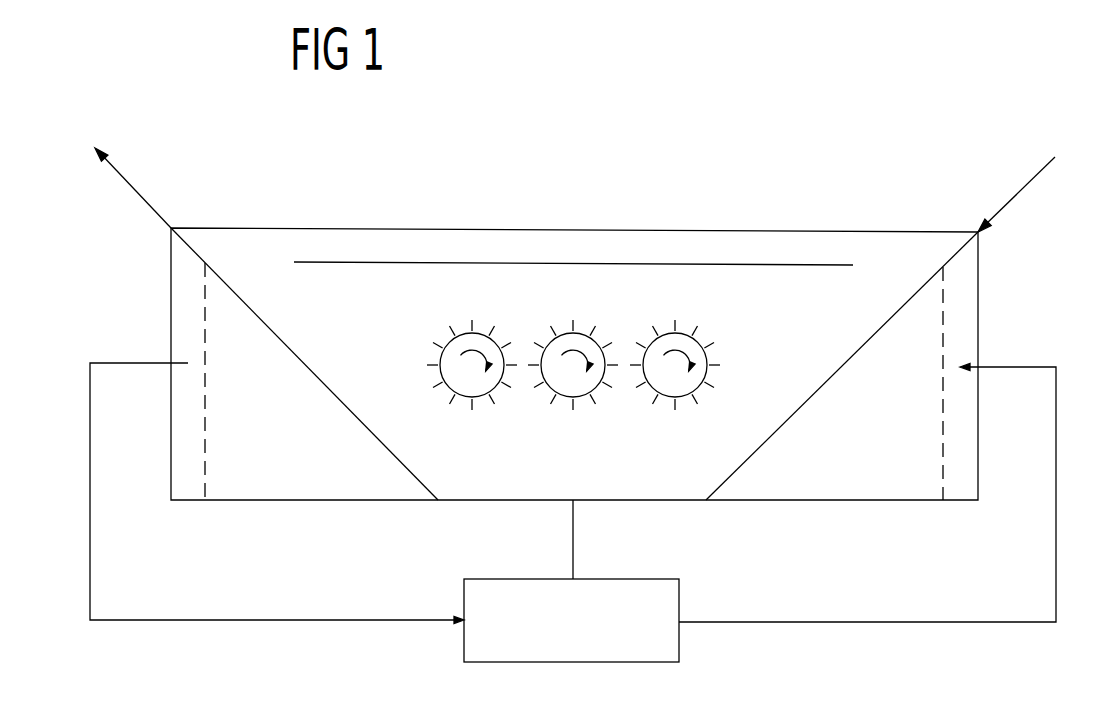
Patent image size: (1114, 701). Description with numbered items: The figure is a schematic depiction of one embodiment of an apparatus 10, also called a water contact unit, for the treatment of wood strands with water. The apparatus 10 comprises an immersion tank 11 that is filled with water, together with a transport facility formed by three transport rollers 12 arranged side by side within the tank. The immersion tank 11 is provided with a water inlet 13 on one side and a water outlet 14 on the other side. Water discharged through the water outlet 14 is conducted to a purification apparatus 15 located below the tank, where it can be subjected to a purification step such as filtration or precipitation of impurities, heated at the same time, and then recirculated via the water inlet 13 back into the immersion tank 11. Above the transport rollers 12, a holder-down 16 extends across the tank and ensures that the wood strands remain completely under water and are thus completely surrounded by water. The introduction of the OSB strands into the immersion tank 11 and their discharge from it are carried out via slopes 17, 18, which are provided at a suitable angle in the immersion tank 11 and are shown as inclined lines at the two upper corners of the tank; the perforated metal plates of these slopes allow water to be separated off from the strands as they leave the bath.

The apparatus 10 is at (906, 158).
The immersion tank 11 is at (170, 314).
The transport rollers 12 is at (680, 387).
The water inlet 13 is at (867, 427).
The water outlet 14 is at (277, 426).
The purification apparatus 15 is at (572, 638).
The holder-down 16 is at (498, 264).
The slope 17 is at (1028, 182).
The slope 18 is at (114, 182).